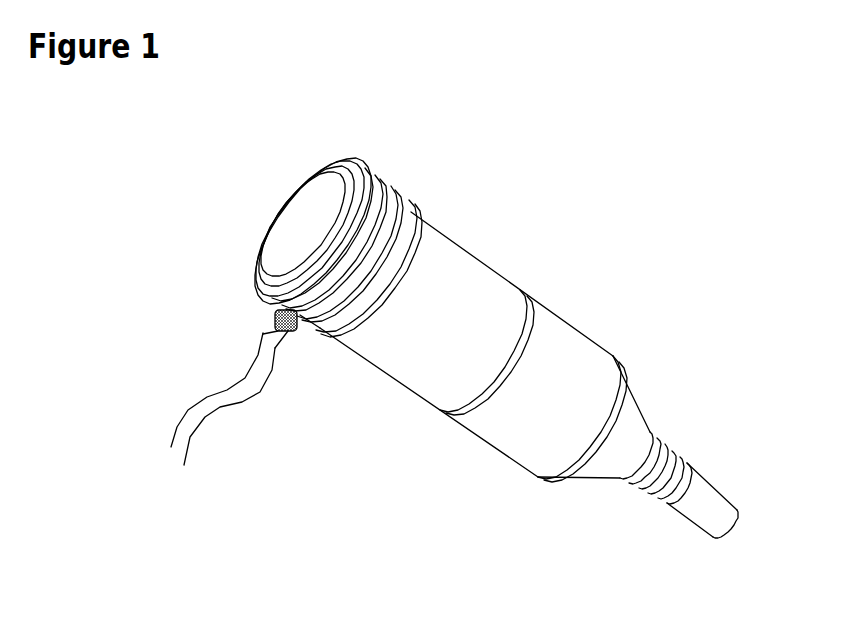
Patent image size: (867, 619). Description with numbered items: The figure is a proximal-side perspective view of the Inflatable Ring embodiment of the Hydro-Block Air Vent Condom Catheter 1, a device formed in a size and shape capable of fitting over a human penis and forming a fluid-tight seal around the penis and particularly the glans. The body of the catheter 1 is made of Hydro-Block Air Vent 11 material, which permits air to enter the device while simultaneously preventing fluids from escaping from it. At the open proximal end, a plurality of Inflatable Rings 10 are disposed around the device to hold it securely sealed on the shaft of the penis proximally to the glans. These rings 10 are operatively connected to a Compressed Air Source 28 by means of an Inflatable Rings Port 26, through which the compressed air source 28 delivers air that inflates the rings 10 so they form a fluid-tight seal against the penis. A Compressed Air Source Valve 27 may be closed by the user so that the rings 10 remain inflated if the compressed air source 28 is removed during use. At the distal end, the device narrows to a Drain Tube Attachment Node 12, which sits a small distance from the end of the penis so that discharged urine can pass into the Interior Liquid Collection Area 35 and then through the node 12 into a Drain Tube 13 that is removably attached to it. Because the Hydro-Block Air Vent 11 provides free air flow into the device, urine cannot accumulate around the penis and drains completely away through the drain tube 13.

The Hydro-Block Air Vent Condom Catheter 1 is at (530, 342).
The Inflatable Rings 10 is at (417, 208).
The Hydro-Block Air Vent 11 is at (472, 294).
The Drain Tube Attachment Node 12 is at (666, 436).
The Drain Tube 13 is at (713, 489).
The Inflatable Rings Port 26 is at (263, 332).
The Compressed Air Source Valve 27 is at (304, 336).
The Compressed Air Source 28 is at (234, 413).
The Interior Liquid Collection Area 35 is at (613, 465).